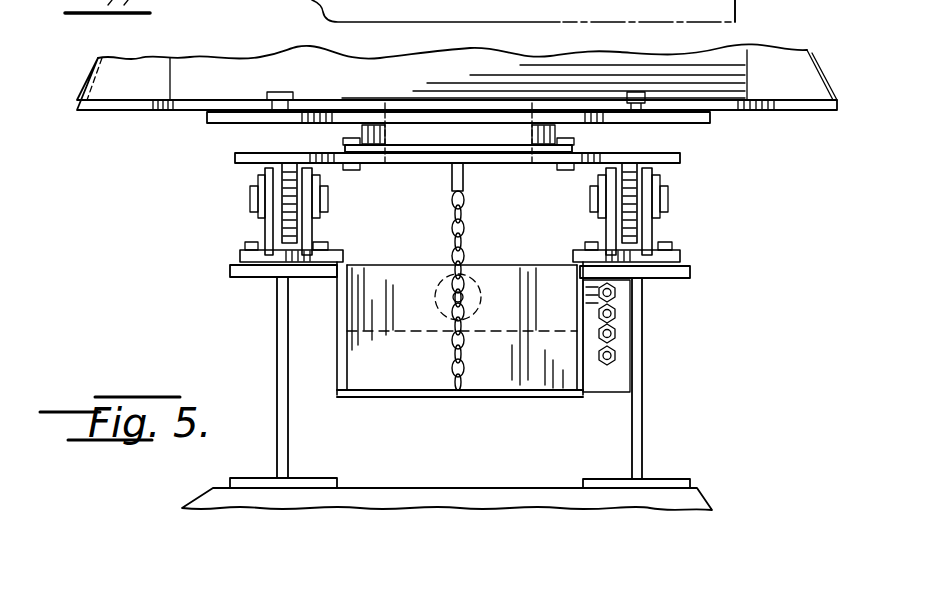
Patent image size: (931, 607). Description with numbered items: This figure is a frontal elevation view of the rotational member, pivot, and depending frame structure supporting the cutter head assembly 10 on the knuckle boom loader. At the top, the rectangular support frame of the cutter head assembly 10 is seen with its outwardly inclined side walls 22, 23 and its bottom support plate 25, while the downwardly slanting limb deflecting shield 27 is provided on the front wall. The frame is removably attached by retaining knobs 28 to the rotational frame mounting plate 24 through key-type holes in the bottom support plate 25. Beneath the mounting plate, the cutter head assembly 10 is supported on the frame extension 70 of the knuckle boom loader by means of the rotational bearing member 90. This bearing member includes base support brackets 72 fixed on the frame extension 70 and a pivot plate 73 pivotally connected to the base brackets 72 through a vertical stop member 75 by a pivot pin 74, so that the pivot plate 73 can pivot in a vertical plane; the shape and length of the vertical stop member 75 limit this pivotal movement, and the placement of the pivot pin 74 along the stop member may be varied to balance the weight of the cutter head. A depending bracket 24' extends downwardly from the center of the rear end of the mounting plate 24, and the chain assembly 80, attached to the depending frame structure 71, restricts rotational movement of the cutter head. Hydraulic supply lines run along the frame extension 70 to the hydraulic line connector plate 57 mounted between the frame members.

The self-aligning cutter head 10 is at (304, 44).
The side wall 22 is at (86, 76).
The side wall 23 is at (830, 22).
The rotational frame mounting plate 24 is at (434, 143).
The depending bracket 24' is at (489, 276).
The bottom support plate 25 is at (175, 112).
The limb deflecting shield 27 is at (182, 78).
The retaining knobs 28 is at (290, 90).
The hydraulic line connector plate 57 is at (624, 323).
The frame extension 70 is at (282, 318).
The depending frame structure 71 is at (497, 396).
The base support brackets 72 is at (268, 218).
The pivot plate 73 is at (665, 162).
The pivot pin 74 is at (250, 203).
The vertical stop member 75 is at (297, 216).
The chain assembly 80 is at (448, 247).
The rotational bearing member 90 is at (568, 137).